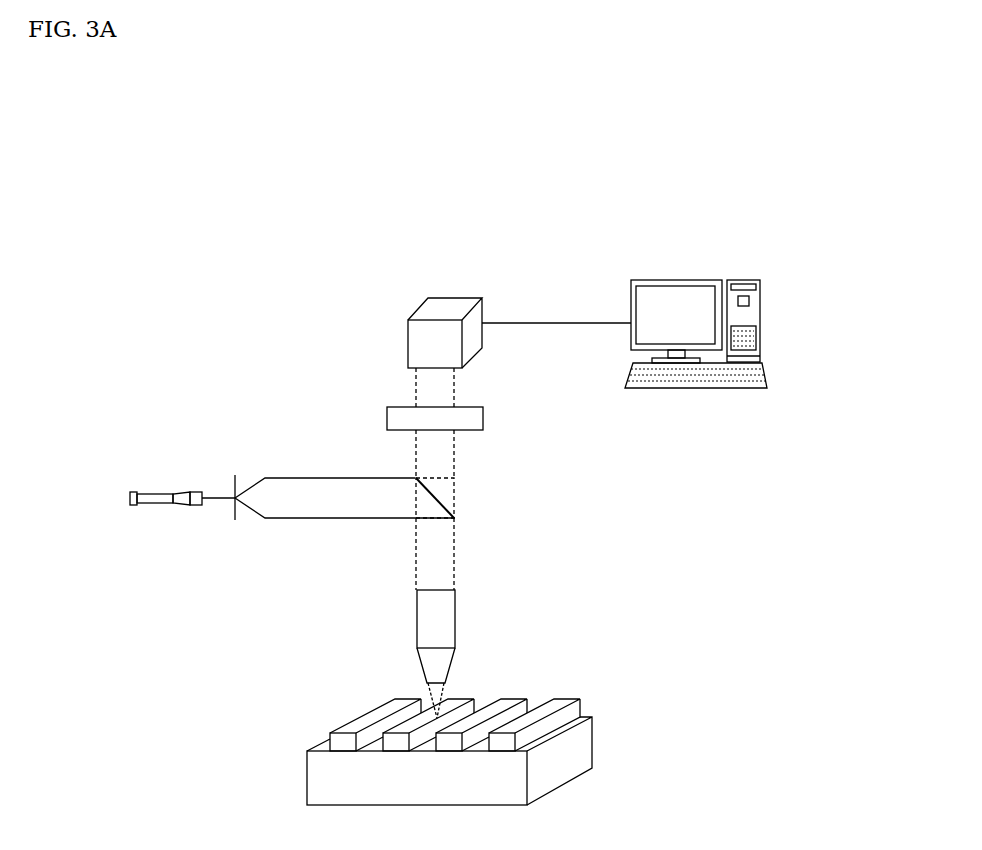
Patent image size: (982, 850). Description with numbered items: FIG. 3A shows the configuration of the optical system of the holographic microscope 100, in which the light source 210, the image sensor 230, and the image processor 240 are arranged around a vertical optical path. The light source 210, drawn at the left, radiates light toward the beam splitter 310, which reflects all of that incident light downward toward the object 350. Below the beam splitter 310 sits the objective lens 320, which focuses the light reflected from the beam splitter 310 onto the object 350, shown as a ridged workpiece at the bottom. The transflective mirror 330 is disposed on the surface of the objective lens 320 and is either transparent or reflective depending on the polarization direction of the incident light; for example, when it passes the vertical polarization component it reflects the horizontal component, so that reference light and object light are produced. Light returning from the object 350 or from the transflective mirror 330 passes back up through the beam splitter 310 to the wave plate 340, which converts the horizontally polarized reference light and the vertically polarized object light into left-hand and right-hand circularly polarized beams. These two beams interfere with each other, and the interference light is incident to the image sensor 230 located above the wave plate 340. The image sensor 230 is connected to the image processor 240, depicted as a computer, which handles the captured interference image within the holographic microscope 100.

The holographic microscope 100 is at (450, 165).
The light source 210 is at (155, 492).
The image sensor 230 is at (437, 298).
The image processor 240 is at (742, 280).
The beam splitter 310 is at (430, 503).
The objective lens 320 is at (430, 620).
The transflective mirror 330 is at (440, 693).
The wave plate 340 is at (405, 412).
The object 350 is at (582, 742).